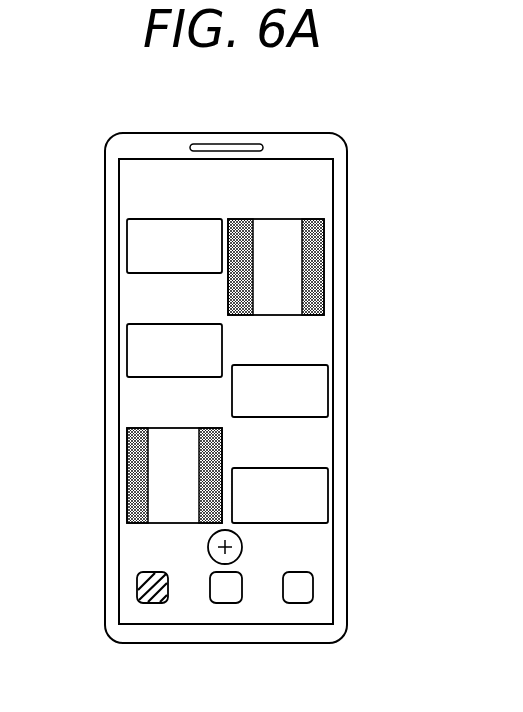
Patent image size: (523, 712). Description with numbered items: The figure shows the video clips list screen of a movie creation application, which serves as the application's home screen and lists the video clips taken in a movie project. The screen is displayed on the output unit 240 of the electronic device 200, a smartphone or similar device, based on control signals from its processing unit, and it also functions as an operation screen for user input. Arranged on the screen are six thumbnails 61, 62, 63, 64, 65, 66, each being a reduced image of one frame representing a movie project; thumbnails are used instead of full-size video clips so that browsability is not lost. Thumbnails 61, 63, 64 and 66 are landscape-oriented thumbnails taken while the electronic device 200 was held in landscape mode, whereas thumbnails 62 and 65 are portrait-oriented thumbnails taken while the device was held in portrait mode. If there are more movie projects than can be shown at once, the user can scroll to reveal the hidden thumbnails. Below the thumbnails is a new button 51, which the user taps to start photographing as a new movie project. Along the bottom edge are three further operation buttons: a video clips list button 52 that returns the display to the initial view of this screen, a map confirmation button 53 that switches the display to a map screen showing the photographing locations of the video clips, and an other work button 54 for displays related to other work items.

The electronic device 200 is at (288, 133).
The output unit 240 is at (328, 187).
The thumbnail 61 is at (168, 250).
The thumbnail 62 is at (283, 274).
The thumbnail 63 is at (168, 363).
The thumbnail 64 is at (283, 388).
The thumbnail 65 is at (168, 475).
The thumbnail 66 is at (283, 500).
The new button 51 is at (243, 549).
The video clips list button 52 is at (153, 603).
The map confirmation button 53 is at (226, 595).
The other work button 54 is at (298, 595).